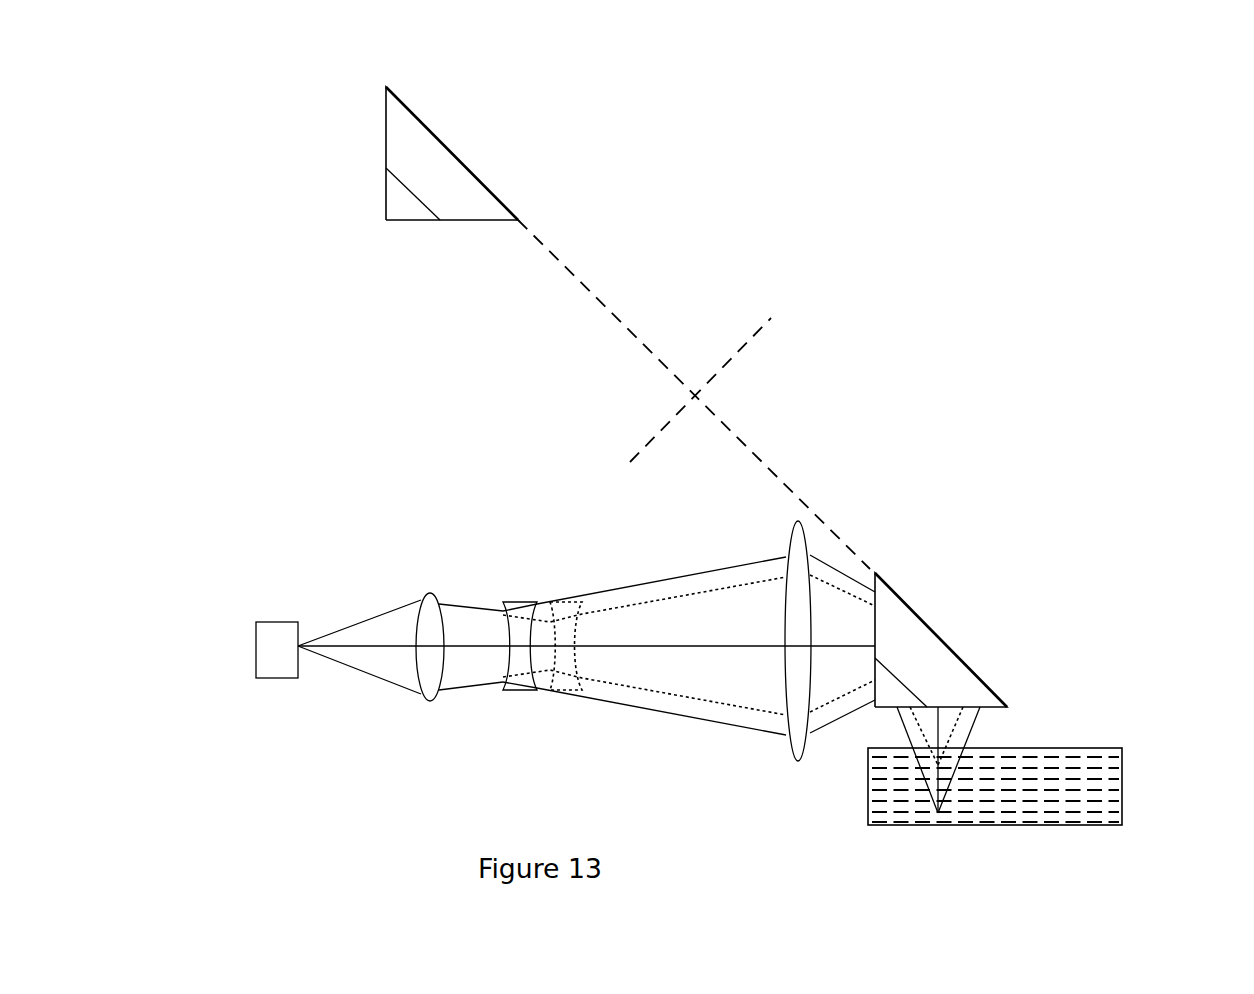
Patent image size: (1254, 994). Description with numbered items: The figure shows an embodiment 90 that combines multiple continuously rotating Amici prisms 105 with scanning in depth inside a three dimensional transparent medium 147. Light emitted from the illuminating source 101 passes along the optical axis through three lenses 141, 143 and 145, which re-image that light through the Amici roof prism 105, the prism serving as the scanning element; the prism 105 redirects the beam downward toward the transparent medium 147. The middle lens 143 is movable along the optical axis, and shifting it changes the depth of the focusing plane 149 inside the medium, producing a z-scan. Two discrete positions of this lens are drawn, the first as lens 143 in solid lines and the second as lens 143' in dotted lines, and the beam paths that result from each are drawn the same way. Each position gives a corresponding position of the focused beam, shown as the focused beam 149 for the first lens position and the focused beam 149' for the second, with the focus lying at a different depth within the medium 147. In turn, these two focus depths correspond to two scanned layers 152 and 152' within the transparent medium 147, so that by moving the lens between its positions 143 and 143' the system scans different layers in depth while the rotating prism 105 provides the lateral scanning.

The embodiment 90 is at (1026, 375).
The illuminating source 101 is at (256, 636).
The Amici roof prism 105 is at (445, 147).
The lens 141 is at (440, 604).
The lens 143 is at (644, 636).
The lens (second position) 143' is at (644, 664).
The lens 145 is at (803, 545).
The three dimensional transparent medium 147 is at (1013, 774).
The focused beam / focusing plane 149 is at (966, 806).
The focused beam (second position) 149' is at (998, 735).
The scanned layer 152 is at (1056, 783).
The scanned layer (second position) 152' is at (1060, 741).